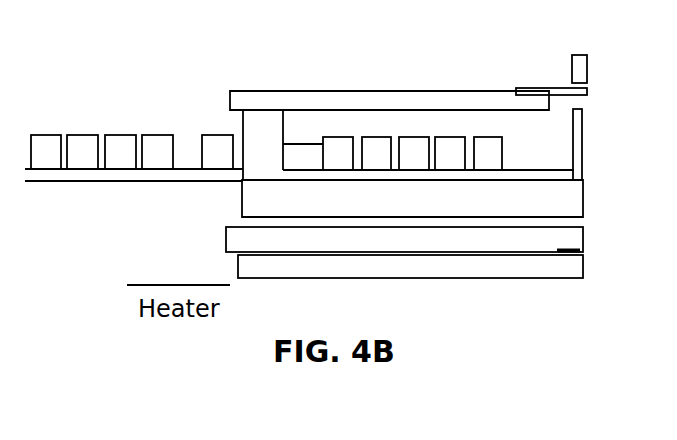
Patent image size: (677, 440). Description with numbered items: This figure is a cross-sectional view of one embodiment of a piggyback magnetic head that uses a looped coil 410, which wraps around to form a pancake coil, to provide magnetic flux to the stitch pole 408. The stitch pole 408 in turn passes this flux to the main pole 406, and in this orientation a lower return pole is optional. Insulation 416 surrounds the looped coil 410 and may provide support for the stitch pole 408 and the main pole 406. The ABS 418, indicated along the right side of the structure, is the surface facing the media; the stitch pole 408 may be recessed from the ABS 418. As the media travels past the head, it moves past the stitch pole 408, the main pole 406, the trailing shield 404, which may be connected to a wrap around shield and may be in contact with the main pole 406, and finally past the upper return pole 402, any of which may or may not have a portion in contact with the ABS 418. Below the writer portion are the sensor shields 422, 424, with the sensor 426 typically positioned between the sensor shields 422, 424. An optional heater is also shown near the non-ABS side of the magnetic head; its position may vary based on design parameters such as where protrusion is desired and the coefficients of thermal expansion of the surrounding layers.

The upper return pole 402 is at (588, 67).
The trailing shield 404 is at (585, 150).
The main pole 406 is at (553, 88).
The stitch pole 408 is at (417, 90).
The looped coil 410 is at (480, 137).
The insulation 416 is at (463, 210).
The ABS 418 is at (592, 197).
The sensor shield 422 is at (226, 238).
The sensor shield 424 is at (238, 260).
The sensor 426 is at (580, 241).